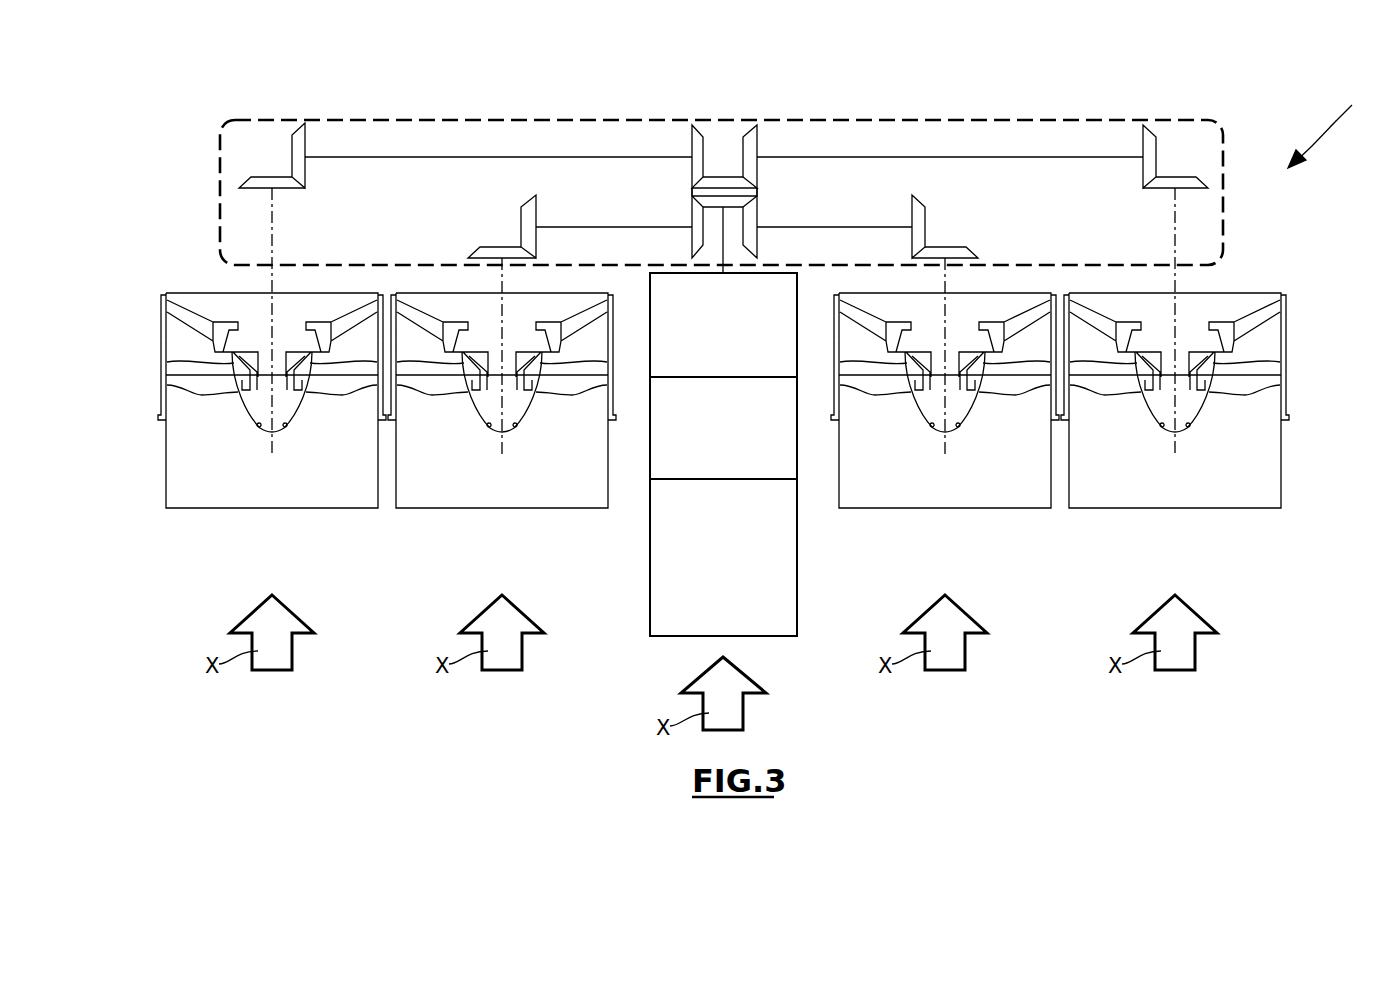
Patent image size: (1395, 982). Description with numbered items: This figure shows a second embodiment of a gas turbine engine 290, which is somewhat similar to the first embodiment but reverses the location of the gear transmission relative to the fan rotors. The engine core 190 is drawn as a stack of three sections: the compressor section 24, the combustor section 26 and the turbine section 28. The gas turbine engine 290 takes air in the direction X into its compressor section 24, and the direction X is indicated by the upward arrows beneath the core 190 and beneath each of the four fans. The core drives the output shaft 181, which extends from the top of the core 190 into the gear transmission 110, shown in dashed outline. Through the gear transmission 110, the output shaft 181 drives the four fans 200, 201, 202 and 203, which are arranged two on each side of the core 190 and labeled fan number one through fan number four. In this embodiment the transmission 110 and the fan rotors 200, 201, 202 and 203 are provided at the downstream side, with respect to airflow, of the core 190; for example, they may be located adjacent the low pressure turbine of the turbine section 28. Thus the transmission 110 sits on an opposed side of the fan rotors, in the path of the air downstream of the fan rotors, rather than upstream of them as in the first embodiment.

The gas turbine engine embodiment 290 is at (1340, 131).
The gear transmission 110 is at (240, 152).
The output shaft 181 is at (725, 226).
The core 190 is at (650, 548).
The turbine section 28 is at (710, 340).
The combustor section 26 is at (710, 438).
The compressor section 24 is at (710, 566).
The fan rotor 200 is at (187, 443).
The fan rotor 201 is at (432, 502).
The fan rotor 202 is at (892, 502).
The fan rotor 203 is at (1105, 502).